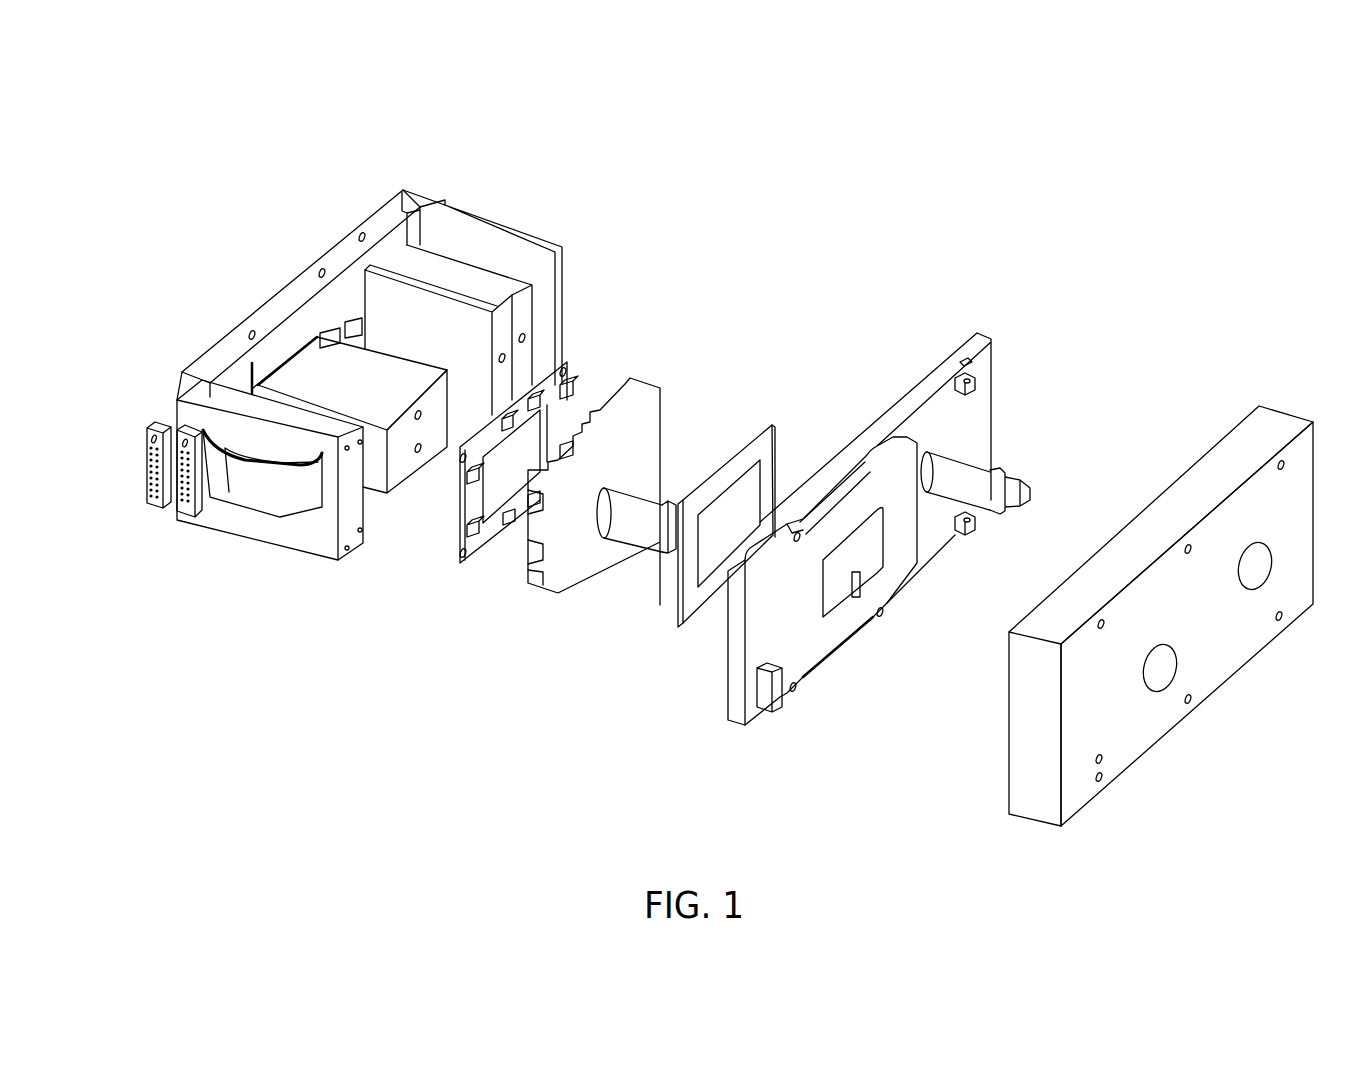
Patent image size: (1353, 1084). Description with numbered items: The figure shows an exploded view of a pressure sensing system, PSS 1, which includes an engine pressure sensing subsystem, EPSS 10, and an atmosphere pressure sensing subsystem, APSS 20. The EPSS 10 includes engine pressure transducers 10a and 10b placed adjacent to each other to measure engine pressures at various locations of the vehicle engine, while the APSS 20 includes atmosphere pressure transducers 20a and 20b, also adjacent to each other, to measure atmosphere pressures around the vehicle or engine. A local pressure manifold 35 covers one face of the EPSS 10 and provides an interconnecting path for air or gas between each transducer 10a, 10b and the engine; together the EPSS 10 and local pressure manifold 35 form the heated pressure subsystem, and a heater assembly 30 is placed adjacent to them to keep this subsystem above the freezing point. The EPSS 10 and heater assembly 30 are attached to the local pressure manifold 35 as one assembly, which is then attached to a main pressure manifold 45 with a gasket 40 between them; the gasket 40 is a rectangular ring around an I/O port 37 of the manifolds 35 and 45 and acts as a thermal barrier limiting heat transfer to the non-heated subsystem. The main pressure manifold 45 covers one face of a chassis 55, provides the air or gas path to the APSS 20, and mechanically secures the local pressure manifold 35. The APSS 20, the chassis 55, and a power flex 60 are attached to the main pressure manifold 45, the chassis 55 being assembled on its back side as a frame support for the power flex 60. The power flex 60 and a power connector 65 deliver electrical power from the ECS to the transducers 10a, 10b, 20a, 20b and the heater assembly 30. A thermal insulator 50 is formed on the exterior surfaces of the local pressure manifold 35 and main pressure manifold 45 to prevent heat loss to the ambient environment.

The PSS 1 is at (248, 184).
The EPSS 10 is at (163, 217).
The engine pressure transducer 10a is at (410, 453).
The engine pressure transducer 10b is at (313, 372).
The chassis 55 is at (230, 354).
The APSS 20 is at (688, 228).
The atmosphere pressure transducer 20a is at (528, 285).
The atmosphere pressure transducer 20b is at (500, 323).
The heater assembly 30 is at (460, 520).
The local pressure manifold 35 is at (540, 557).
The I/O port 37 is at (745, 487).
The gasket 40 is at (680, 600).
The main pressure manifold 45 is at (760, 638).
The thermal insulator 50 is at (1025, 769).
The power flex 60 is at (283, 497).
The power connector 65 is at (150, 465).